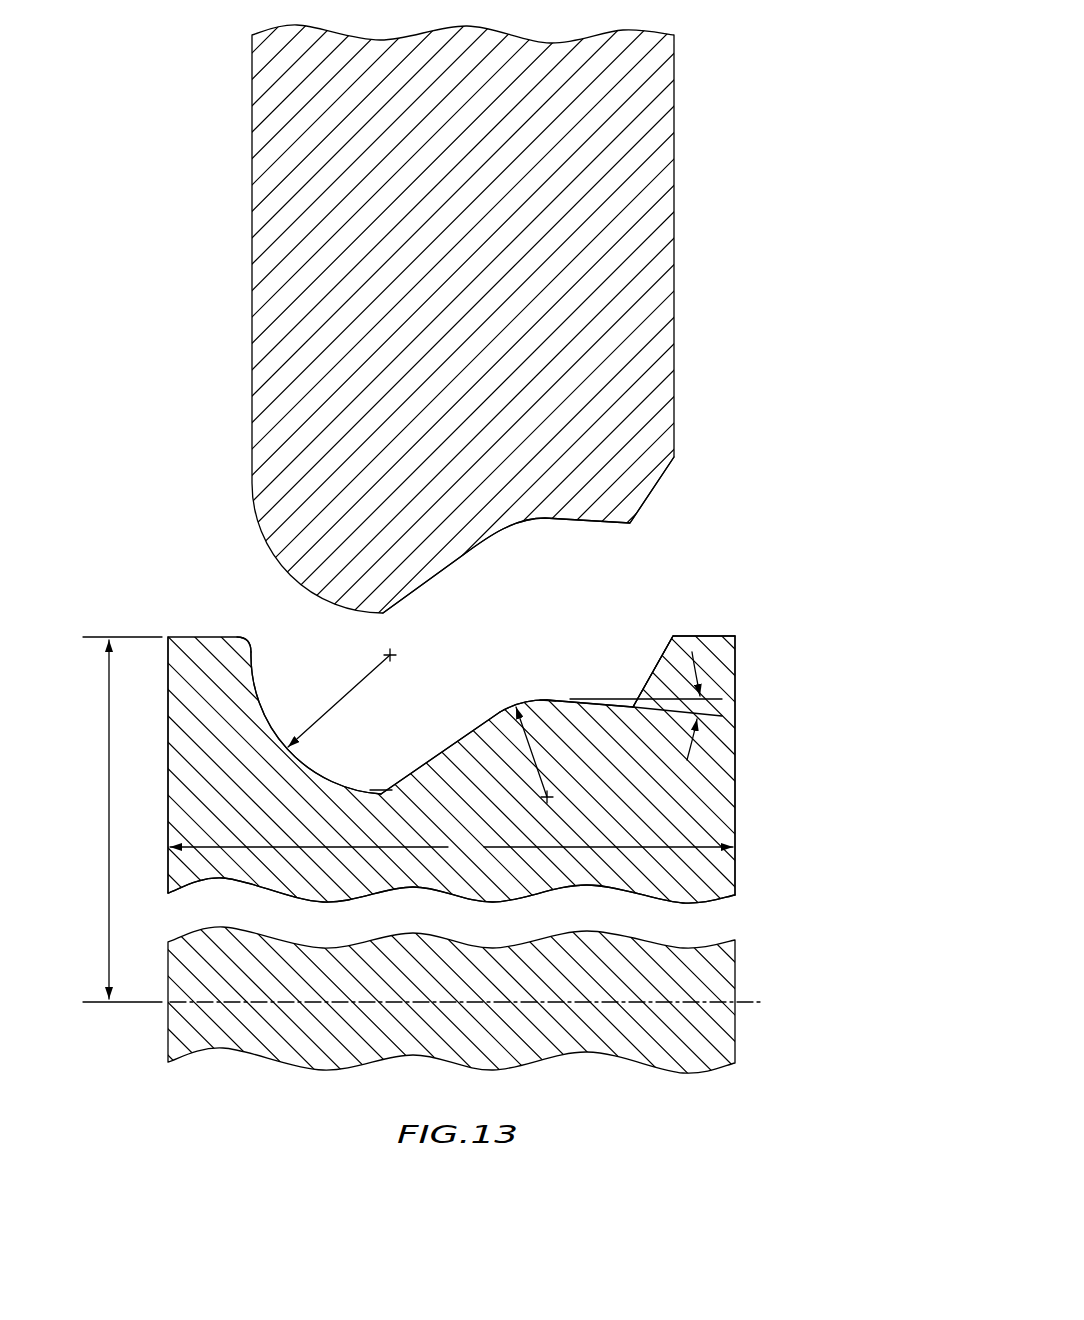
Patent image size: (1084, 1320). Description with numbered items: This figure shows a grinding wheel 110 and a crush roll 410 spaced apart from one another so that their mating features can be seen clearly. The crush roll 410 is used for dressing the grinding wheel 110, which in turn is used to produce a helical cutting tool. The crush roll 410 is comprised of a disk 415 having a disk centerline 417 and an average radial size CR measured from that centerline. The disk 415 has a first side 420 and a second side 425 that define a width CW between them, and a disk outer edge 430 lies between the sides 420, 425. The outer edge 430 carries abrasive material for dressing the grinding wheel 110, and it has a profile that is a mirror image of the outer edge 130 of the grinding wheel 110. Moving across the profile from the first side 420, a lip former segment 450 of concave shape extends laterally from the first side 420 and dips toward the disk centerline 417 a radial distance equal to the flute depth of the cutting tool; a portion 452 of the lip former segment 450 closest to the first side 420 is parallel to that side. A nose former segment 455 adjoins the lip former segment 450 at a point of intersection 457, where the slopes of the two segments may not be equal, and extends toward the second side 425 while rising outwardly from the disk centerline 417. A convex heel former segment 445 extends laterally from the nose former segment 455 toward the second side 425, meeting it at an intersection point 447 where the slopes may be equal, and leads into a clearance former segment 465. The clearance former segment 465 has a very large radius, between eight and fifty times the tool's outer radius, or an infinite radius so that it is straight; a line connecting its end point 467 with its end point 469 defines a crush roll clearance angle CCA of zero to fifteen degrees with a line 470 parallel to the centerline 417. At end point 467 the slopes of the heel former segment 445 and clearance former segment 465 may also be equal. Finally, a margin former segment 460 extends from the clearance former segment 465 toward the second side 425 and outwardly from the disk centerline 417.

The grinding wheel 110 is at (673, 223).
The outer edge of the grinding wheel 130 is at (547, 535).
The crush roll 410 is at (778, 722).
The disk 415 is at (735, 862).
The disk centerline 417 is at (750, 1002).
The first side 420 is at (167, 727).
The second side 425 is at (735, 777).
The disk outer edge 430 is at (704, 621).
The heel former segment 445 is at (516, 710).
The intersection point 447 is at (500, 710).
The lip former segment 450 is at (255, 680).
The portion of the lip former segment 452 is at (253, 647).
The nose former segment 455 is at (438, 752).
The point of intersection 457 is at (380, 793).
The margin former segment 460 is at (667, 642).
The clearance former segment 465 is at (575, 700).
The end point 467 is at (543, 698).
The end point 469 is at (628, 705).
The line parallel to the centerline 470 is at (705, 697).
The crush roll clearance angle CCA is at (703, 707).
The average radial size CR is at (122, 819).
The width CW is at (451, 845).